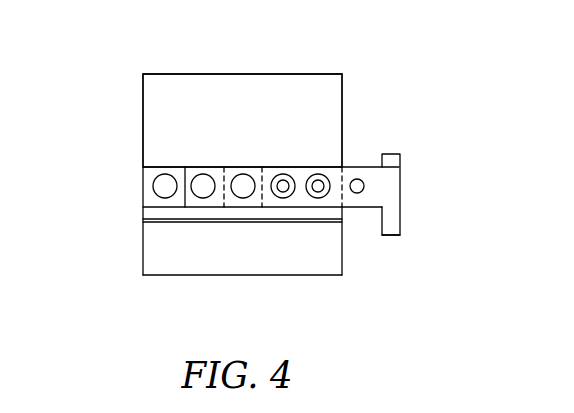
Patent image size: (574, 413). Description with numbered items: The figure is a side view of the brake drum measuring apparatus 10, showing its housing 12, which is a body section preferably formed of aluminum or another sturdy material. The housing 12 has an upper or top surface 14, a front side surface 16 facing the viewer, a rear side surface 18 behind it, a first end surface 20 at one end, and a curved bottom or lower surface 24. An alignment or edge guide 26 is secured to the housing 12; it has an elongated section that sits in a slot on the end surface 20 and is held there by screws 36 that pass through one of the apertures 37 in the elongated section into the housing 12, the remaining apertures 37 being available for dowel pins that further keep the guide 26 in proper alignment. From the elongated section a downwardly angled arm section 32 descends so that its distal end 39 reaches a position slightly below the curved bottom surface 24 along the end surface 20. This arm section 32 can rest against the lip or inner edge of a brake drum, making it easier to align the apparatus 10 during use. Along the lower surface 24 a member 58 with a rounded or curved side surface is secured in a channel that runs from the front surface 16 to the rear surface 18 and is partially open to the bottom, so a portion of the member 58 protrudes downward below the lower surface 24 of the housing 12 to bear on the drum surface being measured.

The brake drum measuring apparatus 10 is at (438, 66).
The housing 12 is at (310, 60).
The top surface 14 is at (192, 73).
The front side surface 16 is at (343, 143).
The rear side surface 18 is at (143, 128).
The first end surface 20 is at (165, 91).
The curved bottom surface 24 is at (247, 255).
The alignment edge guide 26 is at (145, 175).
The downwardly angled arm section 32 is at (390, 219).
The screw 36 is at (318, 198).
The aperture 37 is at (203, 198).
The distal end 39 is at (392, 235).
The member 58 is at (148, 219).